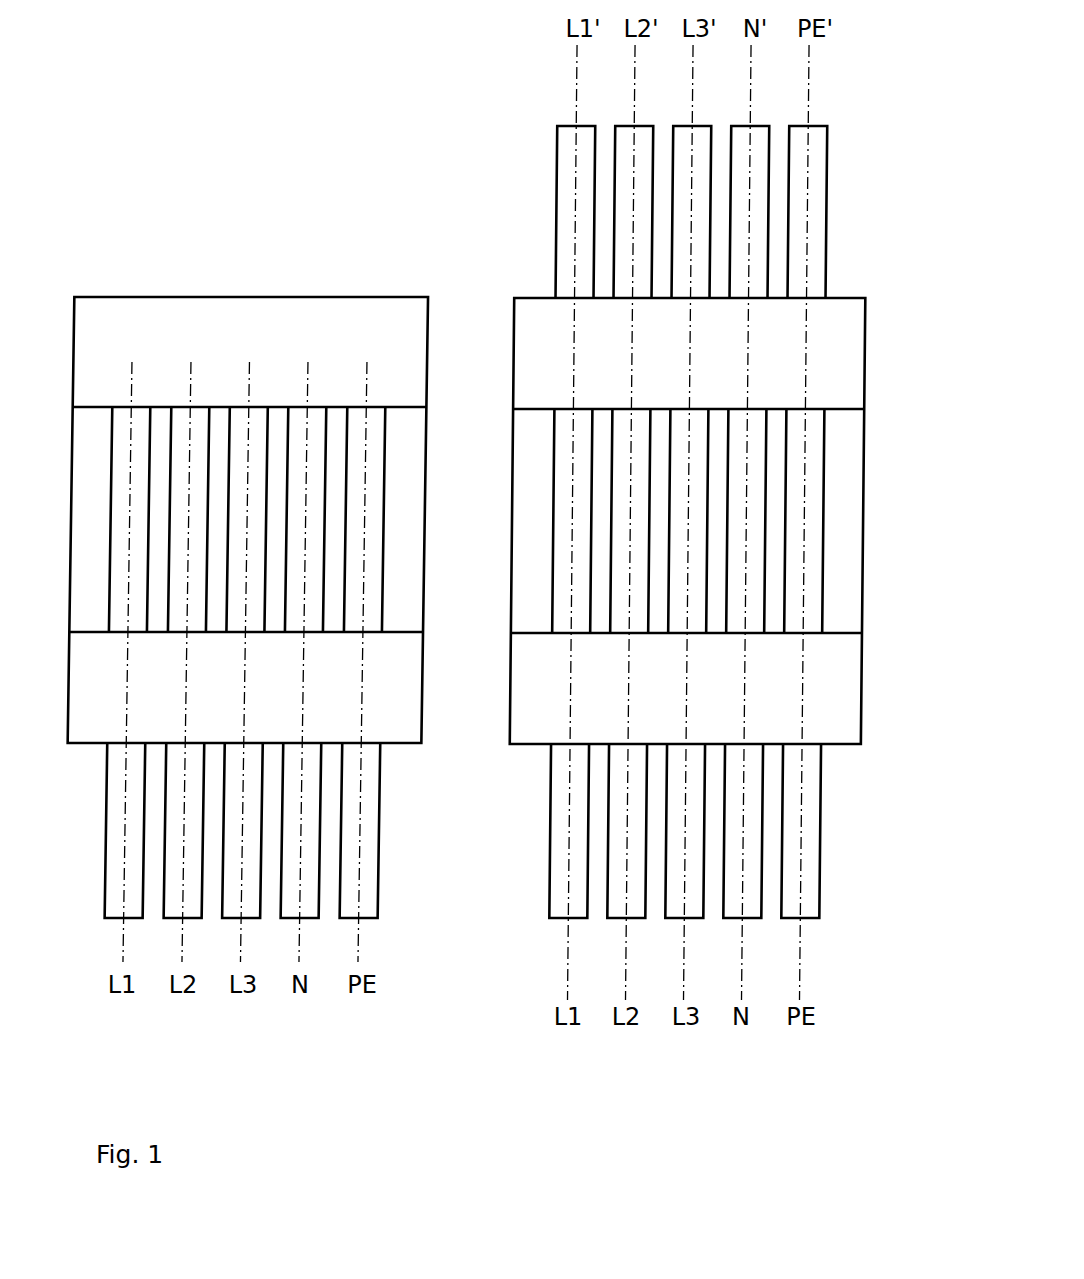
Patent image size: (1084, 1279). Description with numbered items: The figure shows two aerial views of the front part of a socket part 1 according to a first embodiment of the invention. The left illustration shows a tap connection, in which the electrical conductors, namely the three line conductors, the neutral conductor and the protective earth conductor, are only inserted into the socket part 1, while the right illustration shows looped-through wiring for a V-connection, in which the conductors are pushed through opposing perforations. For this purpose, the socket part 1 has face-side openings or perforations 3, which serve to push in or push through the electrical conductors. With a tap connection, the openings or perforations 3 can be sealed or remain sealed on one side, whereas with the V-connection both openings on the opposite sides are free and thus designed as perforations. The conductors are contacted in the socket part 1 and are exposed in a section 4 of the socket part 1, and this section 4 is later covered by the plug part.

The socket part 1 is at (428, 322).
The openings or perforations 3 is at (203, 297).
The section 4 is at (865, 409).